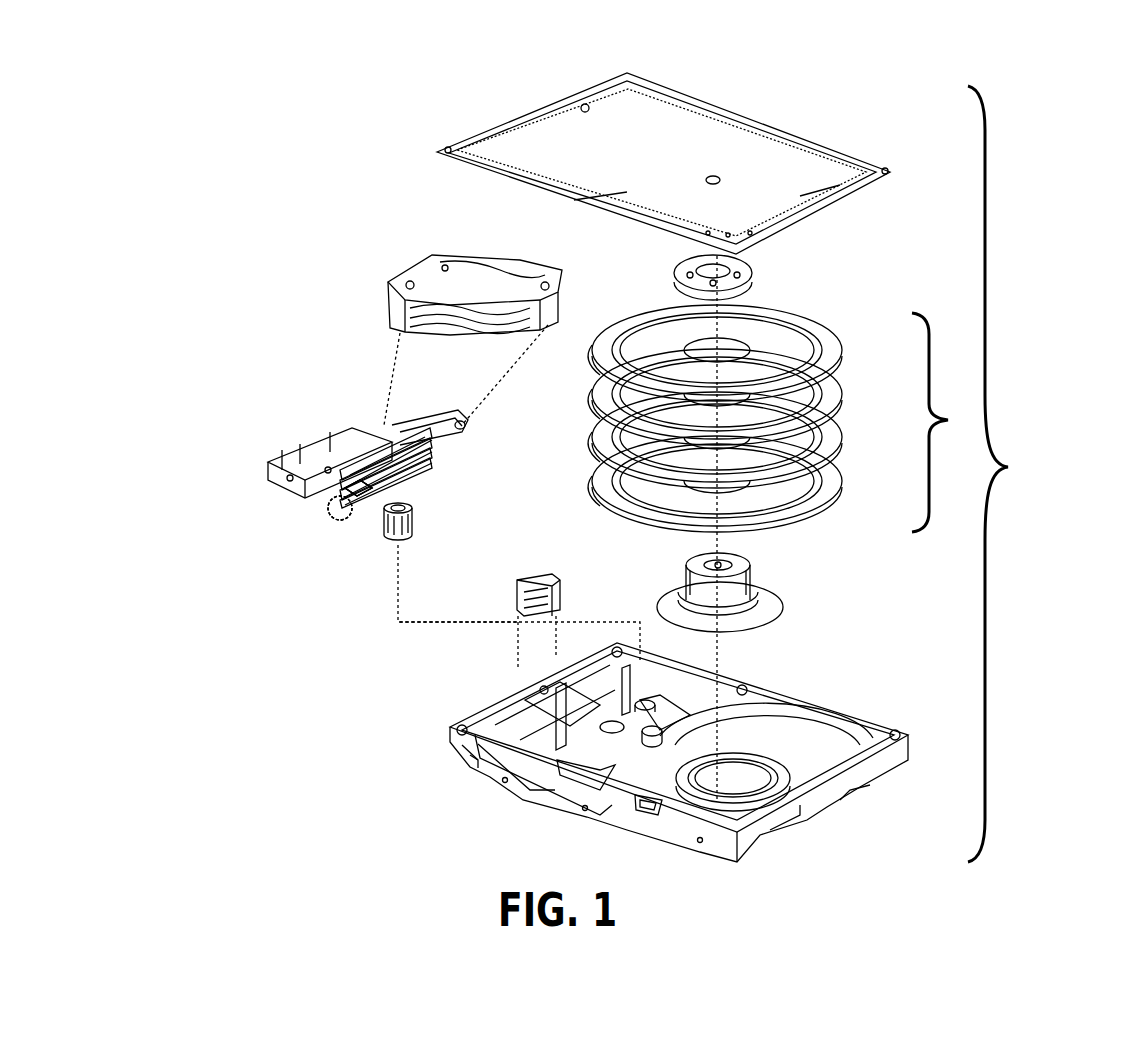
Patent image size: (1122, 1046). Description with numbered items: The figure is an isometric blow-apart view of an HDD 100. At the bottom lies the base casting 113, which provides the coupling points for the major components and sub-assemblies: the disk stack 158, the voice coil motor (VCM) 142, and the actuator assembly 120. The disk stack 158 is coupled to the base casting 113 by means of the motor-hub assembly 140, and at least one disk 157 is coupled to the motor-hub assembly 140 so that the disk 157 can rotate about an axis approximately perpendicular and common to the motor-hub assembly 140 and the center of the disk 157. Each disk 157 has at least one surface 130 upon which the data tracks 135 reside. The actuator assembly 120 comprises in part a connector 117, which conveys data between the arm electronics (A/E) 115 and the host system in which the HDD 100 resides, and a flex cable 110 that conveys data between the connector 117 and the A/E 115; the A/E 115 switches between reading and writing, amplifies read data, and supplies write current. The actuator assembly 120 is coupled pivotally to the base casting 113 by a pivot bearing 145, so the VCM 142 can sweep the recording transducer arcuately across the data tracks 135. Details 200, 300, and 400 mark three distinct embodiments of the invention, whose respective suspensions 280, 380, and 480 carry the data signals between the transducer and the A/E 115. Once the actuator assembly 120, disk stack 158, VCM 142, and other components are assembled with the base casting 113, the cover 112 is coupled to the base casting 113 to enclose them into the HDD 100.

The HDD 100 is at (1011, 465).
The flex cable 110 is at (343, 427).
The cover 112 is at (743, 150).
The base casting 113 is at (468, 752).
The arm electronics (A/E) 115 is at (367, 433).
The connector 117 is at (305, 480).
The actuator assembly 120 is at (314, 393).
The surface 130 is at (739, 393).
The data tracks 135 is at (646, 322).
The motor-hub assembly 140 is at (752, 616).
The voice coil motor (VCM) 142 is at (385, 427).
The pivot bearing 145 is at (383, 537).
The disk 157 is at (592, 355).
The disk stack 158 is at (950, 418).
The detail 200 is at (244, 534).
The detail 300 is at (340, 502).
The detail 400 is at (244, 563).
The suspension 280 is at (300, 566).
The suspension 380 is at (360, 498).
The suspension 480 is at (300, 595).